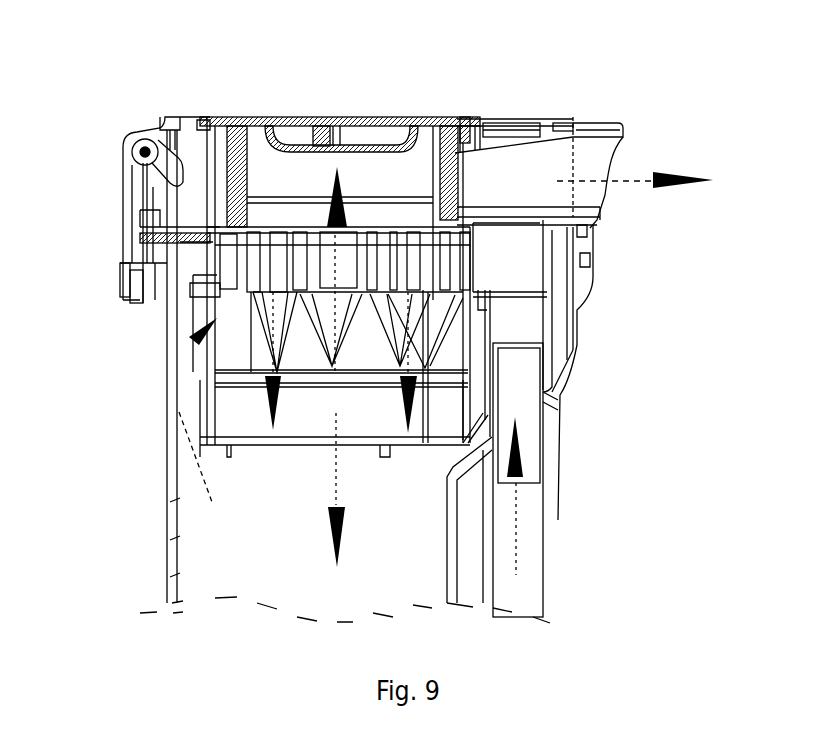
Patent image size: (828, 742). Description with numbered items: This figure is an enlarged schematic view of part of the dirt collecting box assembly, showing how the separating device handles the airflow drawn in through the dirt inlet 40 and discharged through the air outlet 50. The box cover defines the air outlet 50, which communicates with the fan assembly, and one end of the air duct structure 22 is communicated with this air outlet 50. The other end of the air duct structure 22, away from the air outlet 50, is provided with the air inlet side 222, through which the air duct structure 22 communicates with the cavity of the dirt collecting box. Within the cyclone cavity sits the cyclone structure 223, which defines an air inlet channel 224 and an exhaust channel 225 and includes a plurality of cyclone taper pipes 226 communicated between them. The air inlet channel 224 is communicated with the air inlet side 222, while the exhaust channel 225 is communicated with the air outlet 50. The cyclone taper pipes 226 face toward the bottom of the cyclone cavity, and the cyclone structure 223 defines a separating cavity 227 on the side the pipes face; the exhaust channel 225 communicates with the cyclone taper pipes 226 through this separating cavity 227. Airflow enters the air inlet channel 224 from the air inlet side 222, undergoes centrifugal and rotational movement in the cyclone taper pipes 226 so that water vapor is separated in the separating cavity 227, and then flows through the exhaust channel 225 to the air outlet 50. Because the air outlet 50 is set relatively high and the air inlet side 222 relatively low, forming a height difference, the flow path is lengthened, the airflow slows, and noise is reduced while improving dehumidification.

The air duct structure 22 is at (222, 210).
The cyclone structure 223 is at (302, 117).
The exhaust channel 225 is at (380, 197).
The air inlet channel 224 is at (233, 260).
The air inlet side 222 is at (230, 318).
The cyclone taper pipes 226 is at (265, 340).
The separating cavity 227 is at (312, 413).
The dirt inlet 40 is at (508, 358).
The air outlet 50 is at (609, 165).